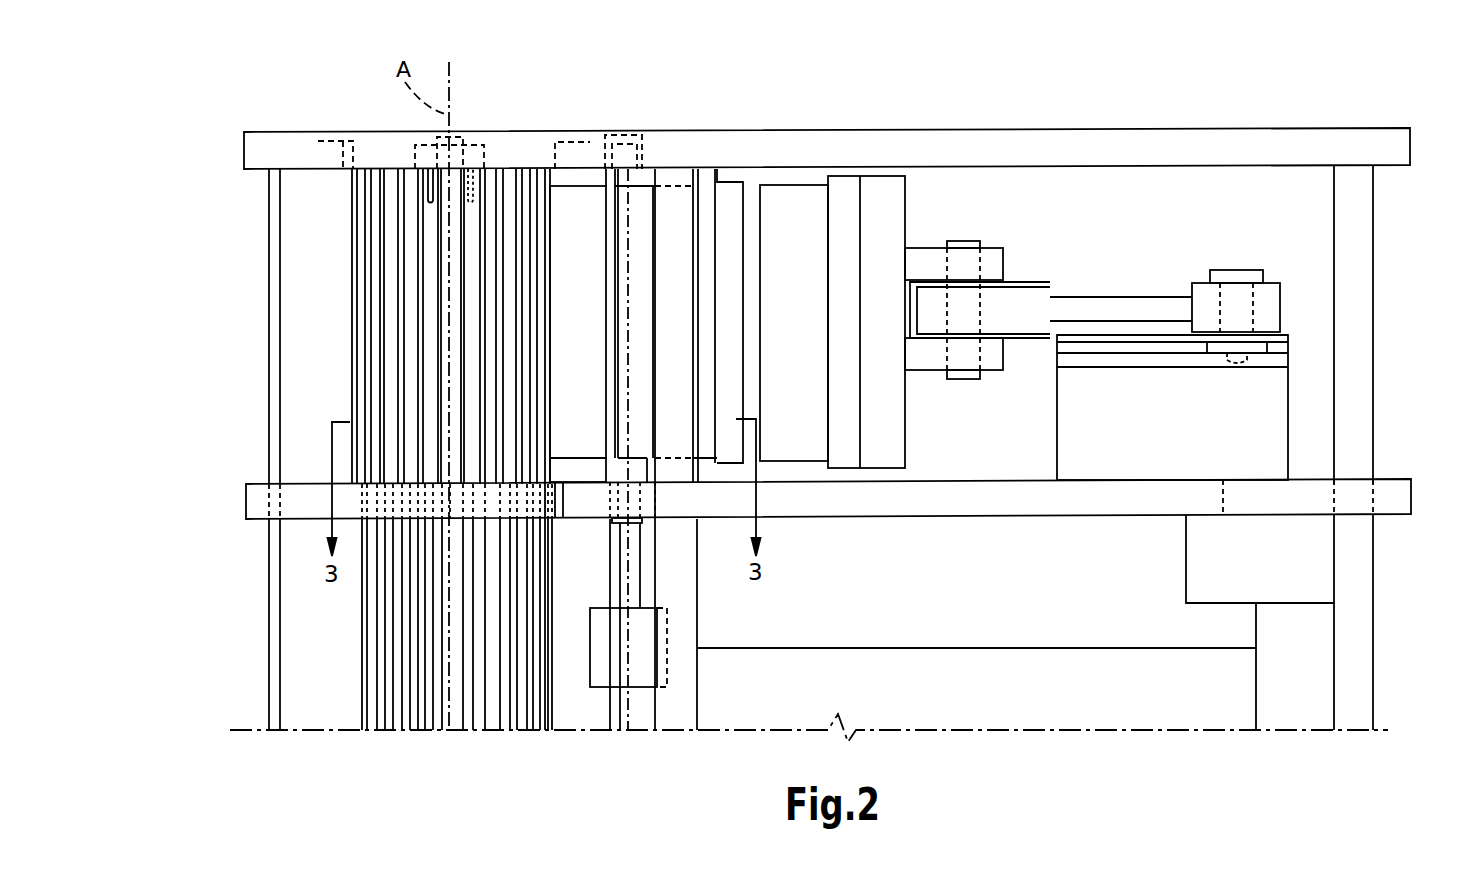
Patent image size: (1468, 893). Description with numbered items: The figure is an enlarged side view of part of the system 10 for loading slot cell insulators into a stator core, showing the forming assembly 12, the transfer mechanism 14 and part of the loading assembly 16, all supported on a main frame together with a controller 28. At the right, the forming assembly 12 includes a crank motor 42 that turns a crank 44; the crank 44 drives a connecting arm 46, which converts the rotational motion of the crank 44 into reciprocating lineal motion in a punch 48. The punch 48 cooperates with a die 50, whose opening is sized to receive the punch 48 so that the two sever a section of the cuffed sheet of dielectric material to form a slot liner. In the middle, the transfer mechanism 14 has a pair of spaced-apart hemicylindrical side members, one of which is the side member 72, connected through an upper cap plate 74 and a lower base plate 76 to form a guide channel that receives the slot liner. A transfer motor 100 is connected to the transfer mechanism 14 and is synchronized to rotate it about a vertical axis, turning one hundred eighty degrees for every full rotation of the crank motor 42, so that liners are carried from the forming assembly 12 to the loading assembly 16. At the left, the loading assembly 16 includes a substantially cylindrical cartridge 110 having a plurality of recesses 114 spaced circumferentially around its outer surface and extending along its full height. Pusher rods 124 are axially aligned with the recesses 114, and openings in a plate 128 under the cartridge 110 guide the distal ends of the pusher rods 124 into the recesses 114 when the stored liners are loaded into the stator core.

The system 10 is at (1046, 72).
The forming assembly 12 is at (970, 208).
The transfer mechanism 14 is at (558, 156).
The loading assembly 16 is at (356, 449).
The controller 28 is at (1298, 563).
The crank motor 42 is at (1255, 437).
The crank 44 is at (1308, 330).
The connecting arm 46 is at (1147, 305).
The punch 48 is at (787, 225).
The die 50 is at (727, 198).
The side member 72 is at (667, 220).
The upper cap plate 74 is at (577, 178).
The lower base plate 76 is at (580, 468).
The transfer motor 100 is at (637, 670).
The cartridge 110 is at (399, 365).
The recesses 114 is at (399, 233).
The pusher rods 124 is at (366, 658).
The plate 128 is at (307, 500).